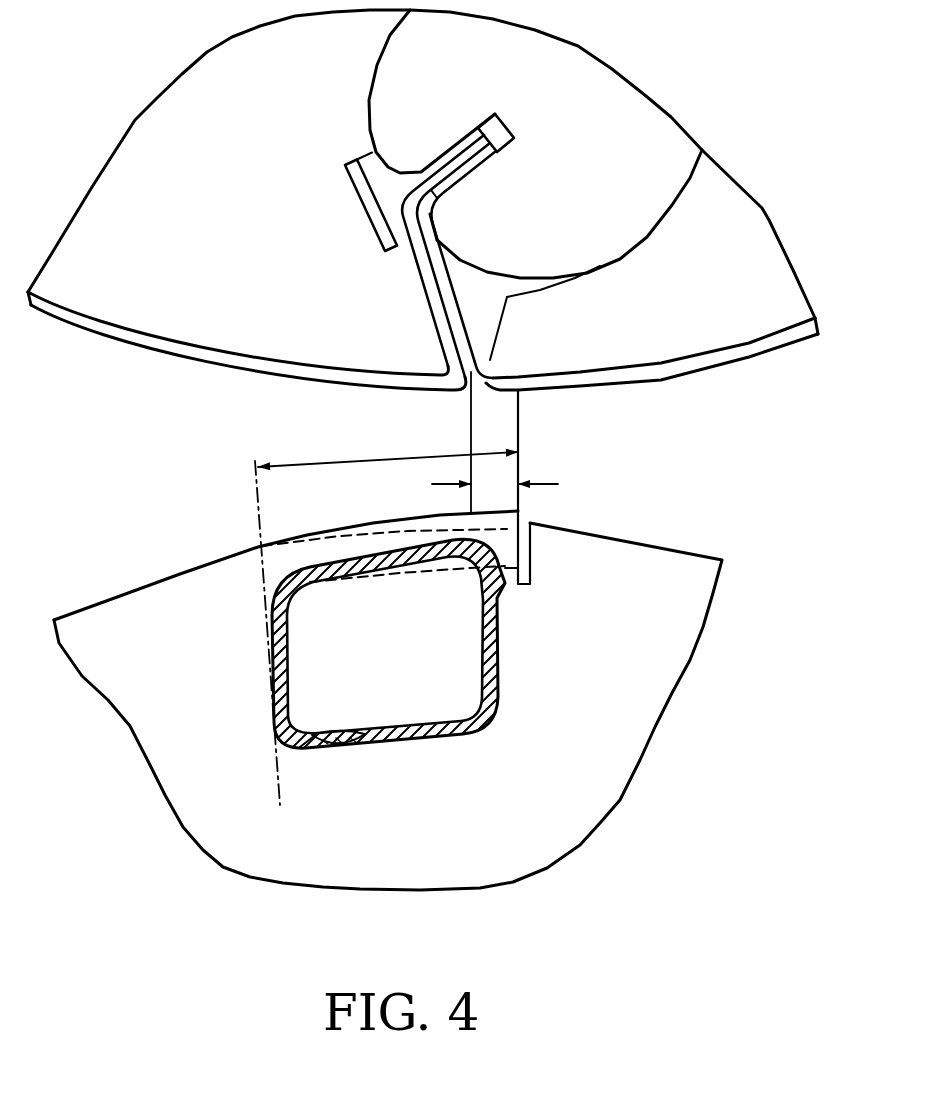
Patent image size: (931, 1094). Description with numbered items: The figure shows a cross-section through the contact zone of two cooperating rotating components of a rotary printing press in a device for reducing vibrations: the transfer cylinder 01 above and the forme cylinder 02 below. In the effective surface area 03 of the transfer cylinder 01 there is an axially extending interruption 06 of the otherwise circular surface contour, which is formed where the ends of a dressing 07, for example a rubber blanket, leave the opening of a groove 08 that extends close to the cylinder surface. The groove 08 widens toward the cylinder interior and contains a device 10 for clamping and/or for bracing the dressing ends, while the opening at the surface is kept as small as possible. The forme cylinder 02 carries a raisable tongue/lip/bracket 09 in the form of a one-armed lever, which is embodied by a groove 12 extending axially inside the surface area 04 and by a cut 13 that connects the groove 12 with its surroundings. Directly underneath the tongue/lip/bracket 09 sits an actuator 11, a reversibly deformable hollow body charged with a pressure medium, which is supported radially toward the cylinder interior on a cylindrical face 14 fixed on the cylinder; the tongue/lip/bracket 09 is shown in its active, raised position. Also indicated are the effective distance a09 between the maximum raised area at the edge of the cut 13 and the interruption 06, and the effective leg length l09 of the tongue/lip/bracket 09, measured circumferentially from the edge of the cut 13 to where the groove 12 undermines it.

The transfer cylinder 01 is at (265, 141).
The forme cylinder 02 is at (176, 769).
The effective surface area 03 is at (747, 355).
The surface area 04 is at (110, 583).
The interruption 06 is at (480, 393).
The dressing 07 is at (102, 327).
The groove 08 is at (362, 164).
The tongue/lip/bracket 09 is at (312, 550).
The device for clamping and/or bracing 10 is at (613, 192).
The actuator 11 is at (492, 668).
The groove 12 is at (315, 750).
The cut 13 is at (538, 521).
The cylindrical face 14 is at (351, 745).
The effective leg length l09 is at (388, 442).
The effective distance a09 is at (521, 483).